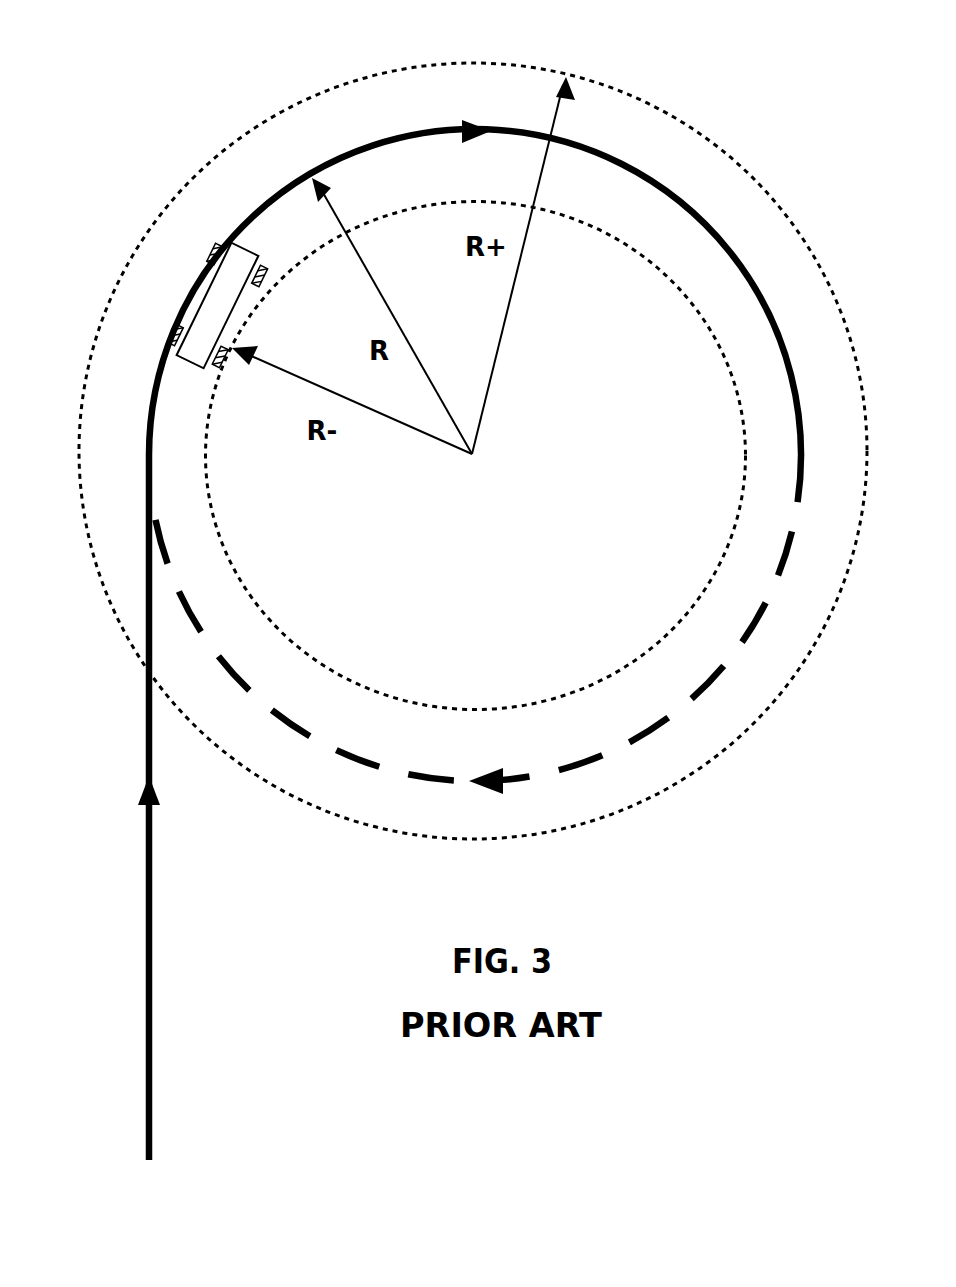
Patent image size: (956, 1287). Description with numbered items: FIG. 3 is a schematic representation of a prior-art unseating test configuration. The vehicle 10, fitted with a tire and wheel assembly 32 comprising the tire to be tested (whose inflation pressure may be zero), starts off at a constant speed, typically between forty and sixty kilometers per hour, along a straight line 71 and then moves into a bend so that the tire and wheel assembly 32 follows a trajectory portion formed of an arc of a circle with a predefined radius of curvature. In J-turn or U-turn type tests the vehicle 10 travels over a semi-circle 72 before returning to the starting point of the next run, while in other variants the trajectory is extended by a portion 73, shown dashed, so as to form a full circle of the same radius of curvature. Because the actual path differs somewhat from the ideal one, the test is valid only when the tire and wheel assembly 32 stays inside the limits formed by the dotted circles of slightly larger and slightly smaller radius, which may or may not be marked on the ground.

The vehicle 10 is at (218, 320).
The tire and wheel assembly 32 is at (210, 250).
The straight line 71 is at (146, 752).
The semi-circle 72 is at (378, 140).
The portion 73 is at (433, 778).